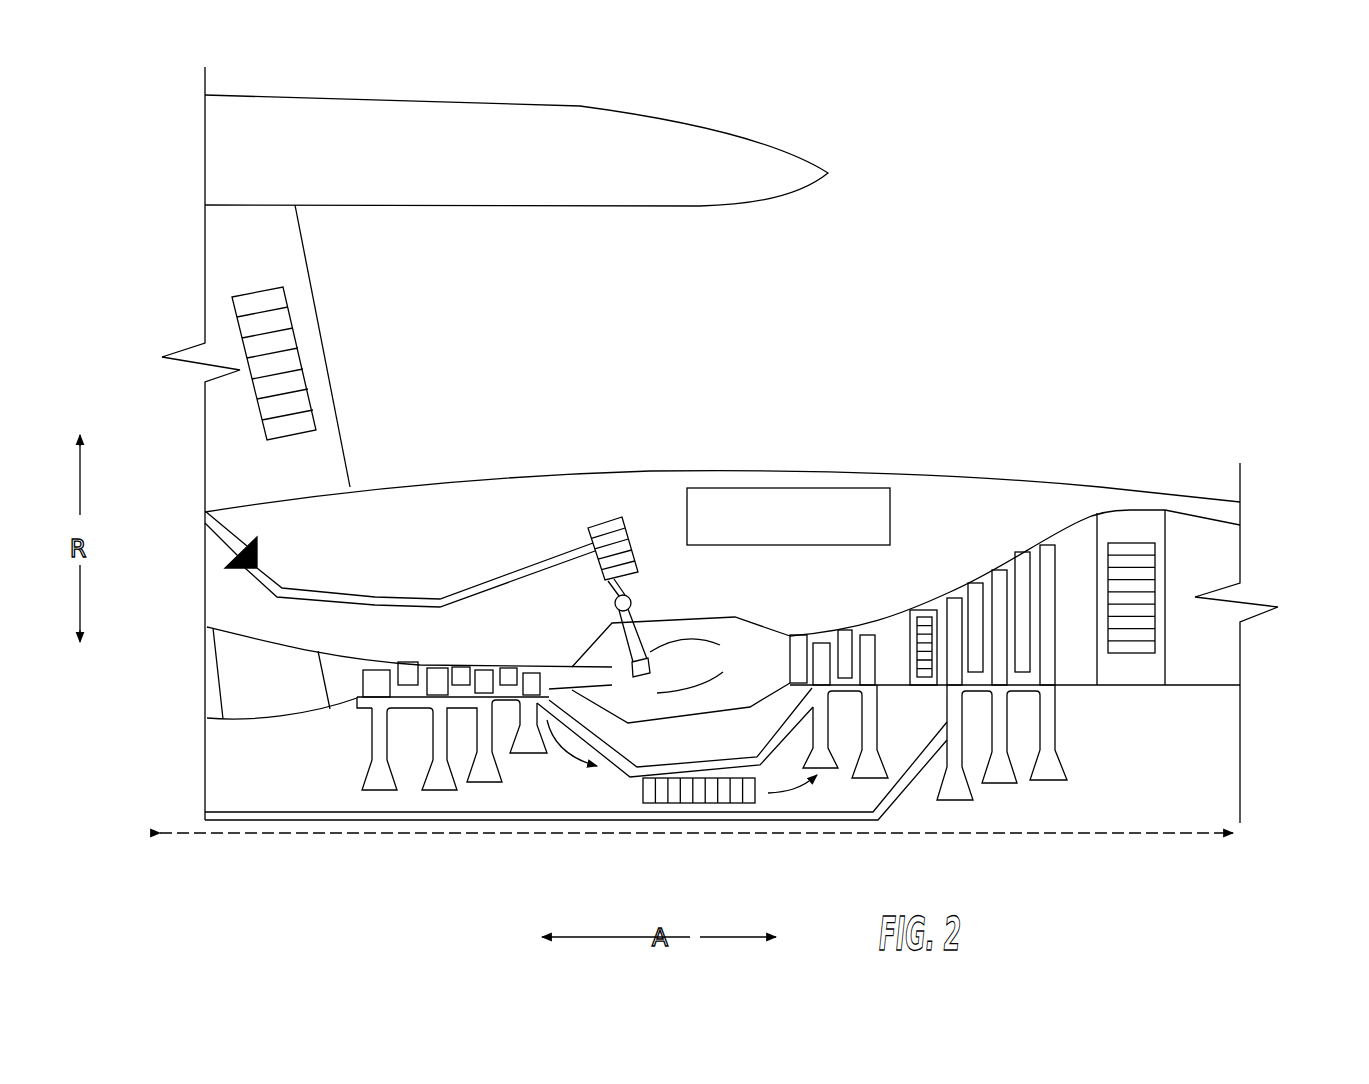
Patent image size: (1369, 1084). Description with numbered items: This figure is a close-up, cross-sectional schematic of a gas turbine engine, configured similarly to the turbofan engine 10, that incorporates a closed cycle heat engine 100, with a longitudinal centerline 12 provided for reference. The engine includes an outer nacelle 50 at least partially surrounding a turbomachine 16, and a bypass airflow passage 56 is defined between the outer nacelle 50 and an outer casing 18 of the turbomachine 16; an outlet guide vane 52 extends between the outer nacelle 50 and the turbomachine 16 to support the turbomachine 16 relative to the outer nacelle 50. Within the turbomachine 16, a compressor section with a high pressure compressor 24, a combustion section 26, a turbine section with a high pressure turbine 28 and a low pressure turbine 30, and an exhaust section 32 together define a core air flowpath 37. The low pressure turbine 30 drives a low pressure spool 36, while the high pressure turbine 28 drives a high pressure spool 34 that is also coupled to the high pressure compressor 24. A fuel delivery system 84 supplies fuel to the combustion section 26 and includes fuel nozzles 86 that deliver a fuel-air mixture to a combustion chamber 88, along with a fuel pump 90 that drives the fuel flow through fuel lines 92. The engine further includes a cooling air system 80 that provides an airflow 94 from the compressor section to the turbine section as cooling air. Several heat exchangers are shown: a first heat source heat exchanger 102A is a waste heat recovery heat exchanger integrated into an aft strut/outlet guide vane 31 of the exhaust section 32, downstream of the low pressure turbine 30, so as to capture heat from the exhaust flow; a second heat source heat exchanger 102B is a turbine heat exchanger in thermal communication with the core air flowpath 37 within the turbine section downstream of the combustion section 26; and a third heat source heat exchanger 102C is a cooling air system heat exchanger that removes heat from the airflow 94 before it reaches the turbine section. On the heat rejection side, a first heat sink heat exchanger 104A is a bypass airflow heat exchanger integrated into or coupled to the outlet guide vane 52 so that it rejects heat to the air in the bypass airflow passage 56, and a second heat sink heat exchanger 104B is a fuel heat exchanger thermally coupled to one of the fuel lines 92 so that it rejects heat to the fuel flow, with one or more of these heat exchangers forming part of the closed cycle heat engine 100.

The turbofan engine 10 is at (1038, 146).
The longitudinal centerline 12 is at (1067, 836).
The turbomachine 16 is at (861, 408).
The outer casing 18 is at (948, 474).
The high pressure compressor 24 is at (346, 639).
The combustion section 26 is at (738, 598).
The high pressure turbine 28 is at (848, 604).
The low pressure turbine 30 is at (998, 541).
The aft strut/outlet guide vane 31 is at (1167, 628).
The exhaust section 32 is at (1230, 551).
The high pressure spool 34 is at (692, 759).
The low pressure spool 36 is at (463, 815).
The core air flowpath 37 is at (251, 716).
The outer nacelle 50 is at (432, 121).
The outlet guide vane 52 is at (300, 250).
The bypass airflow passage 56 is at (548, 307).
The cooling air system 80 is at (616, 797).
The fuel delivery system 84 is at (432, 569).
The fuel nozzle 86 is at (641, 636).
The combustion chamber 88 is at (678, 670).
The fuel pump 90 is at (228, 556).
The fuel lines 92 is at (322, 598).
The airflow 94 is at (570, 750).
The closed cycle heat engine 100 is at (587, 450).
The first heat source heat exchanger 102A is at (1143, 598).
The second heat source heat exchanger 102B is at (922, 617).
The third heat source heat exchanger 102C is at (712, 795).
The first heat sink heat exchanger 104A is at (268, 343).
The second heat sink heat exchanger 104B is at (612, 512).